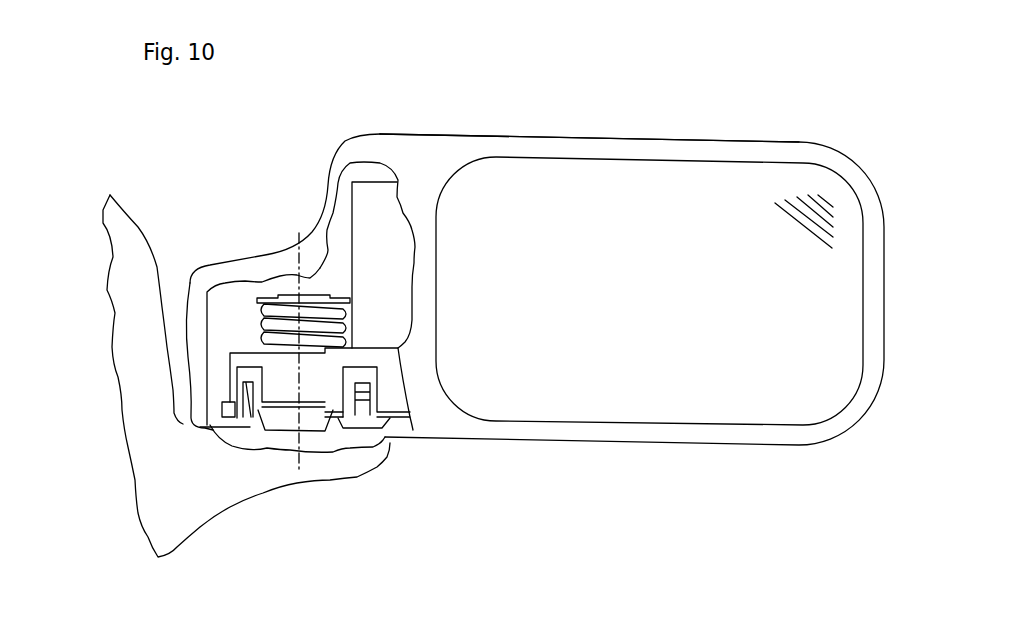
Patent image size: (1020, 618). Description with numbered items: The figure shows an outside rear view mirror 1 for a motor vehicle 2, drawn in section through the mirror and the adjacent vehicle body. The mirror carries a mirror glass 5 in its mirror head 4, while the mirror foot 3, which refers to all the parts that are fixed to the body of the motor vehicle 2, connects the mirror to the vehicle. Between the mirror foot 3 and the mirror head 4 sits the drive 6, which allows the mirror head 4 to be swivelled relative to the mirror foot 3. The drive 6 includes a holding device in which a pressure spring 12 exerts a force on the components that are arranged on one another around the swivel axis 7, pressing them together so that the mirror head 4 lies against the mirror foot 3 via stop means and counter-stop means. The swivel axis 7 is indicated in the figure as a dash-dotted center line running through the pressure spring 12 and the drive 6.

The outside rear view mirror 1 is at (410, 110).
The motor vehicle 2 is at (201, 531).
The mirror foot 3 is at (223, 487).
The mirror head 4 is at (392, 148).
The mirror glass 5 is at (553, 347).
The drive 6 is at (377, 240).
The swivel axis 7 is at (300, 273).
The pressure spring 12 is at (315, 347).